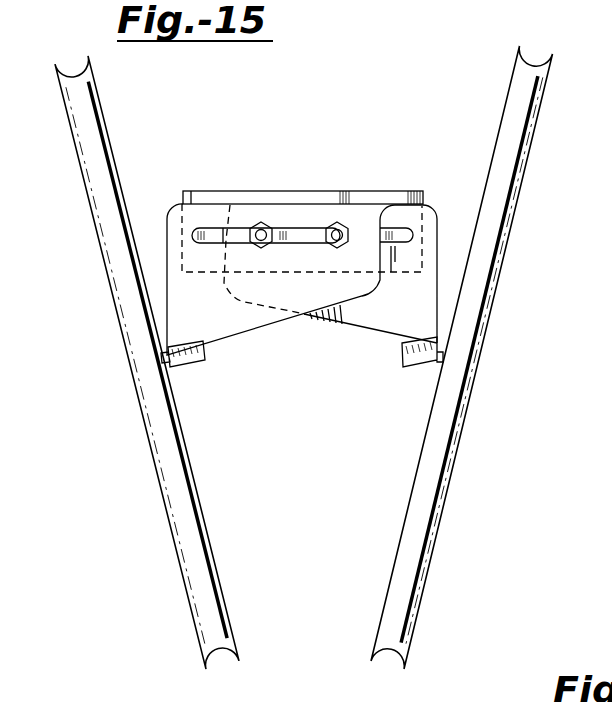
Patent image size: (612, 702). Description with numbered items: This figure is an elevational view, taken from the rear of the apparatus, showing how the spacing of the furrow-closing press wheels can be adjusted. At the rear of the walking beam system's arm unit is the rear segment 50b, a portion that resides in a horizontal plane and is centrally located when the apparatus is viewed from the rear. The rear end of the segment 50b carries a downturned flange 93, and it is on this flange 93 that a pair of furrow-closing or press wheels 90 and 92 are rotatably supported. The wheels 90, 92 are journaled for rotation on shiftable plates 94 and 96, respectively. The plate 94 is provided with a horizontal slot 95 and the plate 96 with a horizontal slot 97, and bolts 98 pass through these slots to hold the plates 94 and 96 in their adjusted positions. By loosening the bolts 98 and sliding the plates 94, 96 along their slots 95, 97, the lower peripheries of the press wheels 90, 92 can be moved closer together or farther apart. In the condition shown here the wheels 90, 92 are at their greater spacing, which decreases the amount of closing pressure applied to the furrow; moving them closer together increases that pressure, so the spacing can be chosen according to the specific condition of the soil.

The rear segment 50b is at (413, 191).
The press wheel 90 is at (97, 217).
The press wheel 92 is at (511, 227).
The downturned flange 93 is at (421, 247).
The shiftable plate 94 is at (218, 323).
The horizontal slot 95 is at (193, 228).
The shiftable plate 96 is at (354, 318).
The horizontal slot 97 is at (397, 241).
The bolts 98 is at (263, 221).